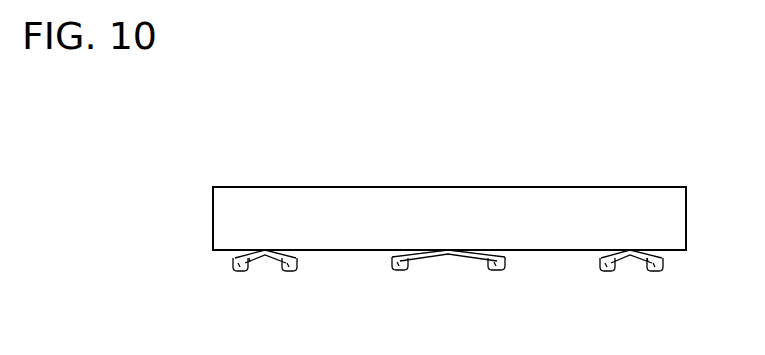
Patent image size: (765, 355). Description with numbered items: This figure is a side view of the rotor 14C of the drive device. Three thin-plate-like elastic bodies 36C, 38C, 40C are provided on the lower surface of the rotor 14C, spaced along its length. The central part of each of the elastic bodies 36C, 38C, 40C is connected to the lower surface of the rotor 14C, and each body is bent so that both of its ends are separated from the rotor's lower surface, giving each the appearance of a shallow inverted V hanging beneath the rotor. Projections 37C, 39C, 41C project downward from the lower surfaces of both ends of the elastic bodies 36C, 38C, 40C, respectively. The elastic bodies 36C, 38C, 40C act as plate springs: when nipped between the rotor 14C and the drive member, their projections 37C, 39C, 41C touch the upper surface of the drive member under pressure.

The rotor 14C is at (456, 201).
The elastic body 36C is at (623, 264).
The projections 37C is at (605, 272).
The elastic body 38C is at (433, 258).
The projections 39C is at (399, 272).
The elastic body 40C is at (255, 264).
The projections 41C is at (237, 272).